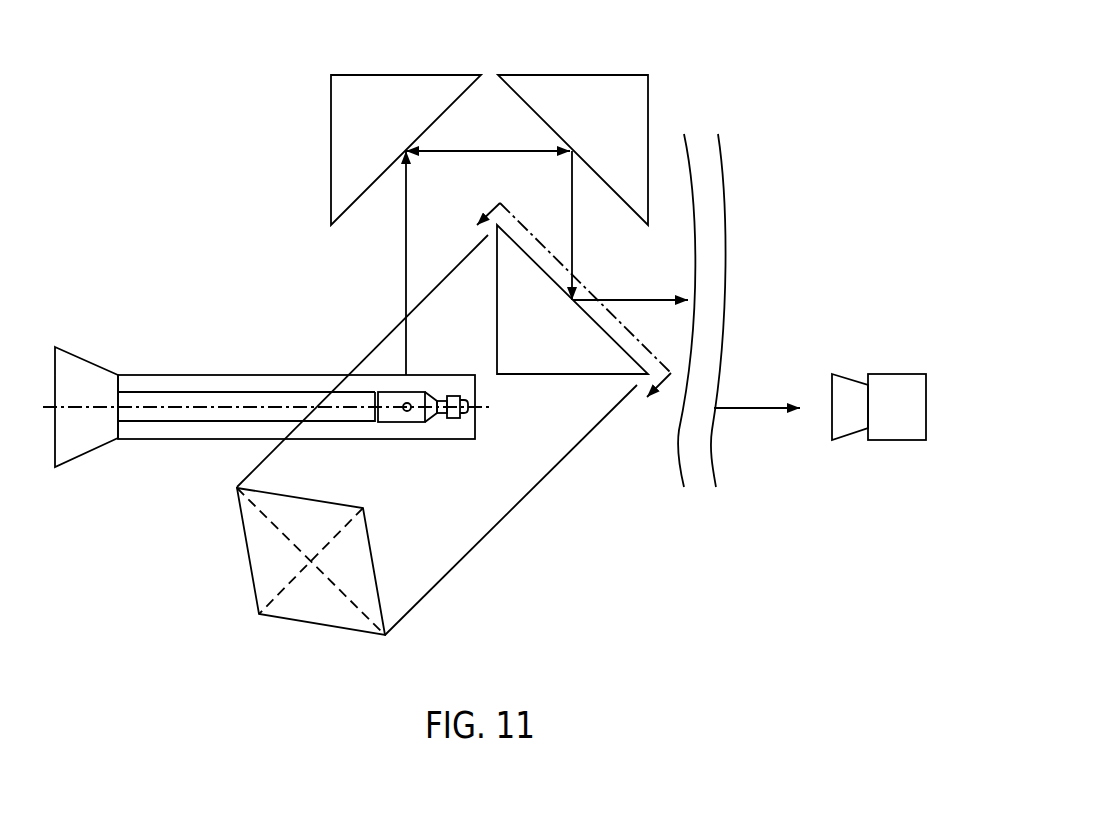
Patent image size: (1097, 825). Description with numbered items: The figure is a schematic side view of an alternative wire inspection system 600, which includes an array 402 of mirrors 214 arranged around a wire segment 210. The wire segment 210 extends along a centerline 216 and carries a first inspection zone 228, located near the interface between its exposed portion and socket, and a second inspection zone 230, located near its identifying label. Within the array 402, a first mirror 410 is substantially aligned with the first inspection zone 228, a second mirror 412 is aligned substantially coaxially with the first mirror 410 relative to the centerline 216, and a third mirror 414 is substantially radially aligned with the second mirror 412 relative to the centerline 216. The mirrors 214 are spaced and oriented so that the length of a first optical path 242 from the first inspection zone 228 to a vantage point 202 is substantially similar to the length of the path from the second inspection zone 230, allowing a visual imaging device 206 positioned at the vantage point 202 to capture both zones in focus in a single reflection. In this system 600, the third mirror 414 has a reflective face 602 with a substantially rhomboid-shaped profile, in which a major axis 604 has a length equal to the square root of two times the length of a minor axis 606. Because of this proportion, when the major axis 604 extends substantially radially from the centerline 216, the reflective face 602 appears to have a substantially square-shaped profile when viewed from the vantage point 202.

The array of mirrors 402 is at (205, 102).
The first mirror 410 is at (352, 75).
The second mirror 412 is at (593, 75).
The mirror 214 is at (513, 75).
The first optical path 242 is at (406, 192).
The third mirror 414 is at (497, 362).
The wire segment 210 is at (270, 392).
The second inspection zone 230 is at (160, 427).
The centerline 216 is at (500, 410).
The first inspection zone 228 is at (402, 427).
The wire inspection system 600 is at (750, 84).
The vantage point 202 is at (898, 388).
The visual imaging device 206 is at (898, 442).
The reflective face 602 is at (334, 575).
The major axis 604 is at (350, 598).
The minor axis 606 is at (342, 532).